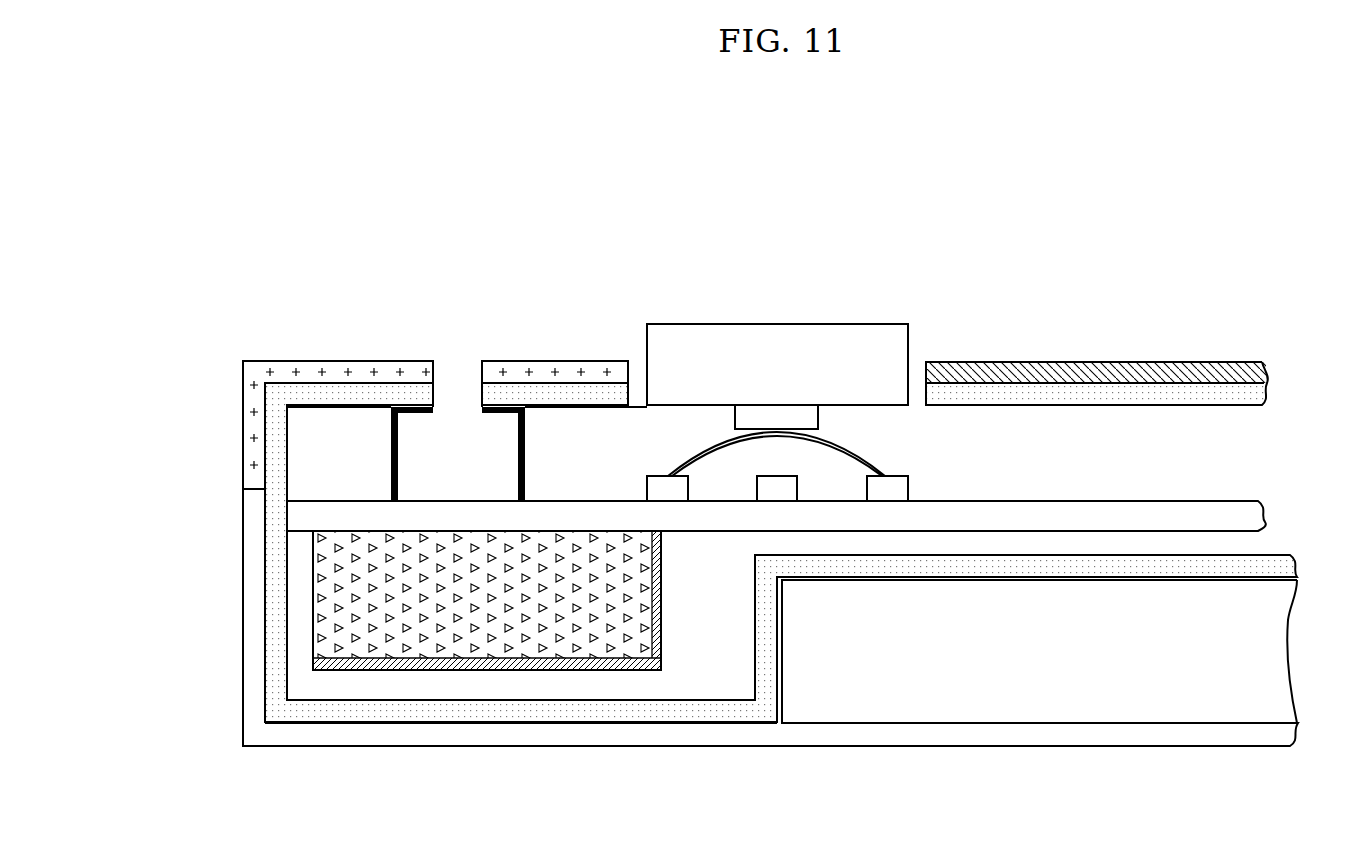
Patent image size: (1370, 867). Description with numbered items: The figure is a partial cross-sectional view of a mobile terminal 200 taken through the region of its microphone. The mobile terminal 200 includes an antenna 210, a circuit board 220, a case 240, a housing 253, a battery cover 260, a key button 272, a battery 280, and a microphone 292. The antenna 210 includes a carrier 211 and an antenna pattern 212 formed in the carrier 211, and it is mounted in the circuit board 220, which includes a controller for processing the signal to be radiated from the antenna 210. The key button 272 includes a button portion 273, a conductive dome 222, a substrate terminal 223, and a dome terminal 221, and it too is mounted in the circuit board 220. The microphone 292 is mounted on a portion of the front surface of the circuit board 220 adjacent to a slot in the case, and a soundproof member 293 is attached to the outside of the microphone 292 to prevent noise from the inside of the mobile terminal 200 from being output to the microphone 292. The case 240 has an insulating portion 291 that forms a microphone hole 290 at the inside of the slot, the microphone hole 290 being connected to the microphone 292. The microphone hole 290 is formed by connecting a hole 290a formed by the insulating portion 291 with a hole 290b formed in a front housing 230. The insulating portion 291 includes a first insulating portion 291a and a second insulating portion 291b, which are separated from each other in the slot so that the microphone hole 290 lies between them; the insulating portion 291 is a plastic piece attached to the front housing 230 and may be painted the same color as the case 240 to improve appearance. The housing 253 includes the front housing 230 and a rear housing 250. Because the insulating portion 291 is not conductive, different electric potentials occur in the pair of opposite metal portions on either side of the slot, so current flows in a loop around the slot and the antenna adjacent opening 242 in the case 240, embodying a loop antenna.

The mobile terminal 200 is at (1216, 174).
The antenna 210 is at (171, 608).
The carrier 211 is at (347, 592).
The antenna pattern 212 is at (350, 667).
The circuit board 220 is at (1247, 517).
The dome terminal 221 is at (663, 492).
The conductive dome 222 is at (708, 442).
The substrate terminal 223 is at (783, 488).
The front housing 230 is at (287, 394).
The case 240 is at (1107, 361).
The antenna adjacent opening 242 is at (635, 373).
The rear housing 250 is at (277, 580).
The housing 253 is at (110, 387).
The battery cover 260 is at (1178, 733).
The key button 272 is at (675, 192).
The button portion 273 is at (788, 362).
The battery 280 is at (1262, 665).
The microphone hole 290 is at (435, 265).
The hole 290a is at (445, 373).
The hole 290b is at (473, 378).
The insulating portion 291 is at (550, 222).
The first insulating portion 291a is at (333, 373).
The second insulating portion 291b is at (535, 373).
The microphone 292 is at (438, 452).
The soundproof member 293 is at (392, 475).